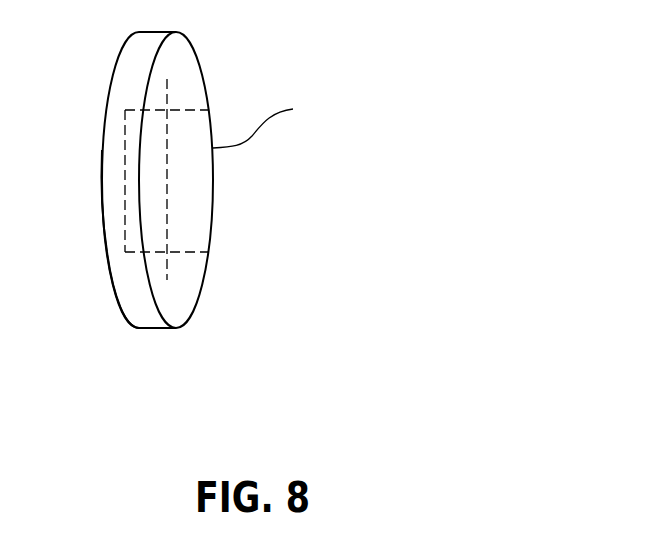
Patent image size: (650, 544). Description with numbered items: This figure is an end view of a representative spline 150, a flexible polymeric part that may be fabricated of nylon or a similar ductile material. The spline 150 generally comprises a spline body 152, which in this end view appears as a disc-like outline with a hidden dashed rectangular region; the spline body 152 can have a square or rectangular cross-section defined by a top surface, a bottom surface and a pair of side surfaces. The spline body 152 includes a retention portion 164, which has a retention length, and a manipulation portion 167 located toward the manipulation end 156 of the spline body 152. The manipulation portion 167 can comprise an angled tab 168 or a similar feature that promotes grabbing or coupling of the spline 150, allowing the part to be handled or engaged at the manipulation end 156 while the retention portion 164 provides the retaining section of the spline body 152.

The spline 150 is at (413, 151).
The spline body 152 is at (213, 202).
The manipulation end 156 is at (143, 330).
The retention portion 164 is at (273, 122).
The manipulation portion 167 is at (119, 309).
The angled tab 168 is at (107, 252).